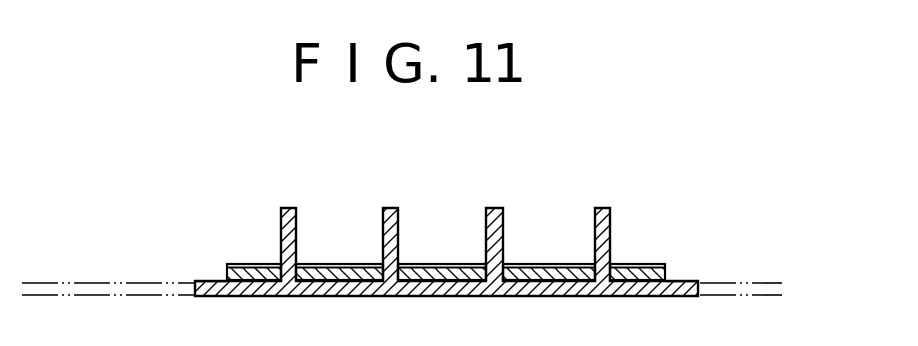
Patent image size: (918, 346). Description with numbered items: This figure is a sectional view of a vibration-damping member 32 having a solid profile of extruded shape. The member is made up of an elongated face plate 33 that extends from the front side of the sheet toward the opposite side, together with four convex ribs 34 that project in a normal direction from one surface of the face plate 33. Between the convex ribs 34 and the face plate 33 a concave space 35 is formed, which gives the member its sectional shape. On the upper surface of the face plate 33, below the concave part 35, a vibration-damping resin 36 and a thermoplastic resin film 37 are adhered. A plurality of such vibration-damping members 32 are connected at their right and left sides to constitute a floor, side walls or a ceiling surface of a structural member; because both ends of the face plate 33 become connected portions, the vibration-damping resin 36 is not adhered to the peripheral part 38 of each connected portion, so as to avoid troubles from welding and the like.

The vibration-damping member 32 is at (541, 180).
The face plate 33 is at (433, 288).
The convex ribs 34 is at (496, 207).
The concave space 35 is at (568, 245).
The vibration-damping resin 36 is at (456, 273).
The thermoplastic resin film 37 is at (423, 265).
The peripheral part 38 is at (227, 273).